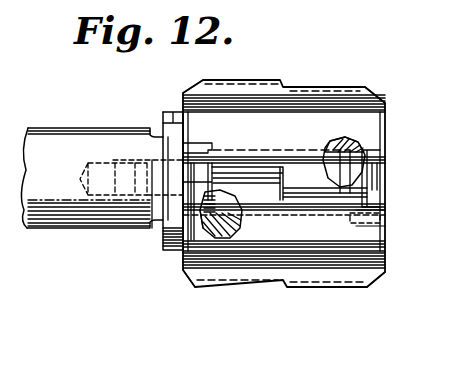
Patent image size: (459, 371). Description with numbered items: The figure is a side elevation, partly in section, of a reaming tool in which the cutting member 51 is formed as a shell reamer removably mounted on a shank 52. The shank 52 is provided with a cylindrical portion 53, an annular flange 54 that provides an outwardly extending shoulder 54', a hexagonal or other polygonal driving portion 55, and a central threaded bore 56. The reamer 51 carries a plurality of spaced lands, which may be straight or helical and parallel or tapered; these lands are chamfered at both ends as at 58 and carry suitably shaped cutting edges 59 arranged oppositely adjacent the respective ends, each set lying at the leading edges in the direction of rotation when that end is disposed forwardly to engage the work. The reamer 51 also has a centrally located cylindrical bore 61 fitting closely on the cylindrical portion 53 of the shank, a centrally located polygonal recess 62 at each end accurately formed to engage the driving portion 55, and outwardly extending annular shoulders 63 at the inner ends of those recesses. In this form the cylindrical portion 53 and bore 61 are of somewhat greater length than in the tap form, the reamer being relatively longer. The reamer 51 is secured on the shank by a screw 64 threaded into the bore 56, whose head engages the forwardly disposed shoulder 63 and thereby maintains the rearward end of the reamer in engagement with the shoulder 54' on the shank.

The cutting member 51 is at (402, 123).
The shank 52 is at (73, 128).
The cylindrical portion 53 is at (313, 134).
The annular flange 54 is at (144, 193).
The outwardly extending shoulder 54' is at (165, 100).
The driving portion 55 is at (198, 143).
The central threaded bore 56 is at (122, 160).
The chamfer 58 is at (383, 92).
The cutting edges 59 is at (385, 102).
The cylindrical bore 61 is at (257, 150).
The recess 62 is at (378, 217).
The annular shoulders 63 is at (342, 140).
The screw 64 is at (350, 167).